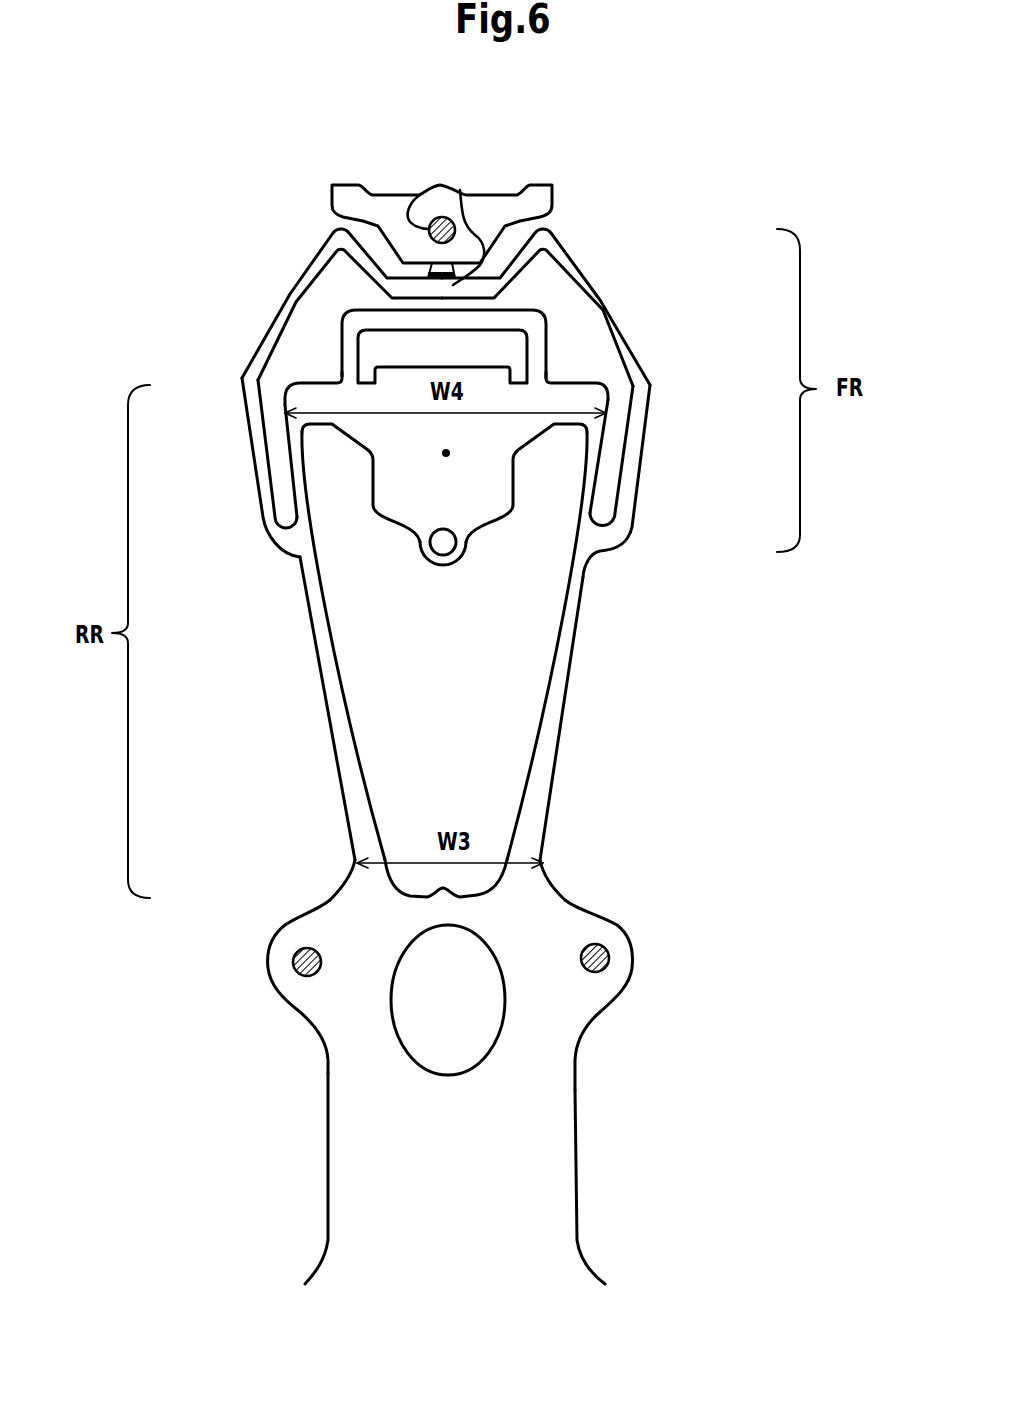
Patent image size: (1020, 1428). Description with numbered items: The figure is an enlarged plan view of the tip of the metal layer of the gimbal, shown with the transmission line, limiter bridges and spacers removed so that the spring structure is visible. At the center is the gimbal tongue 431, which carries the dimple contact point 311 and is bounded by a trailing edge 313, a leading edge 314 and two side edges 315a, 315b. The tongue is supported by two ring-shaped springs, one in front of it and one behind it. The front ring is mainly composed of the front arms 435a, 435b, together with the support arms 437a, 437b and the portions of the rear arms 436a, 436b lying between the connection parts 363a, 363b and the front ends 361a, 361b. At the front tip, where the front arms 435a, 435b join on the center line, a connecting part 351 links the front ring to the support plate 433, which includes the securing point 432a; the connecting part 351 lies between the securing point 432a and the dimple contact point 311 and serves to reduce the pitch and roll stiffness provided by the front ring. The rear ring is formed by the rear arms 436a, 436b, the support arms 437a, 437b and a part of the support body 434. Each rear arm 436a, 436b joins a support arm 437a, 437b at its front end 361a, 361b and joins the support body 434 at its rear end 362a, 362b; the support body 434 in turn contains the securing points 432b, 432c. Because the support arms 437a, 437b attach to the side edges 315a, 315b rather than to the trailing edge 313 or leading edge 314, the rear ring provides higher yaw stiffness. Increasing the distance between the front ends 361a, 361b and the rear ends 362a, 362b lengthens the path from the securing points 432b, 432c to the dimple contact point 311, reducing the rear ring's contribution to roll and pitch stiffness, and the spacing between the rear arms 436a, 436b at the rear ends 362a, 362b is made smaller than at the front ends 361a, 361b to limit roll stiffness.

The dimple contact point 311 is at (445, 455).
The trailing edge 313 is at (423, 367).
The leading edge 314 is at (474, 540).
The side edge 315a is at (513, 472).
The side edge 315b is at (373, 476).
The connecting part 351 is at (449, 217).
The front end 361a is at (622, 380).
The front end 361b is at (268, 388).
The rear end 362a is at (548, 885).
The rear end 362b is at (352, 883).
The connection part 363a is at (592, 551).
The connection part 363b is at (292, 557).
The gimbal tongue 431 is at (425, 574).
The securing point 432a is at (417, 191).
The securing point 432b is at (632, 960).
The securing point 432c is at (294, 958).
The support plate 433 is at (541, 184).
The support body 434 is at (577, 1060).
The front arm 435a is at (640, 462).
The front arm 435b is at (258, 338).
The rear arm 436a is at (555, 773).
The rear arm 436b is at (362, 747).
The support arm 437a is at (572, 383).
The support arm 437b is at (297, 384).